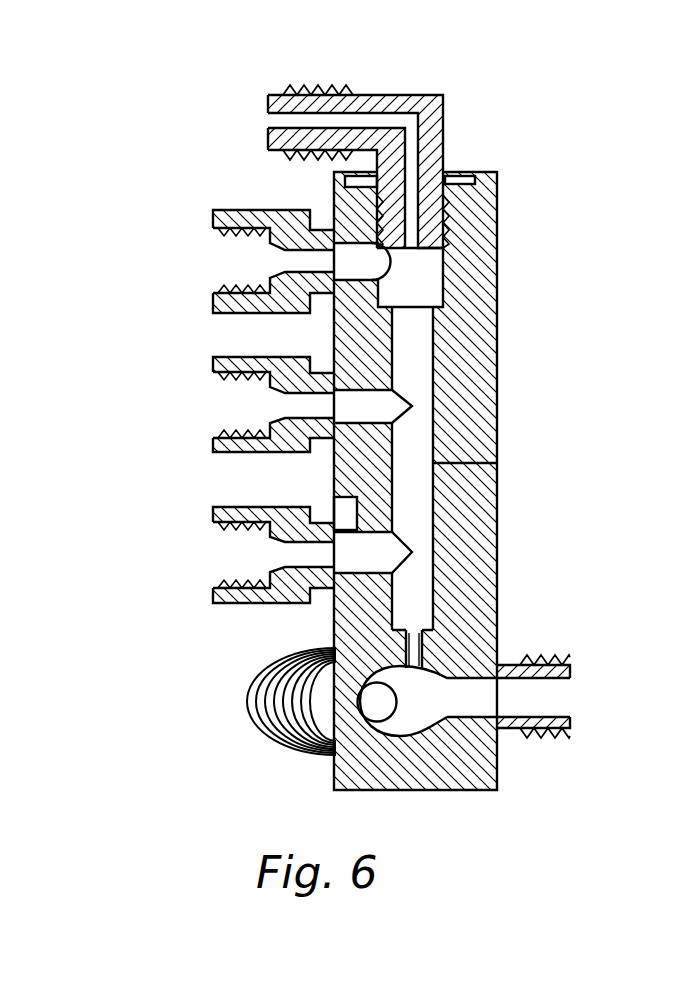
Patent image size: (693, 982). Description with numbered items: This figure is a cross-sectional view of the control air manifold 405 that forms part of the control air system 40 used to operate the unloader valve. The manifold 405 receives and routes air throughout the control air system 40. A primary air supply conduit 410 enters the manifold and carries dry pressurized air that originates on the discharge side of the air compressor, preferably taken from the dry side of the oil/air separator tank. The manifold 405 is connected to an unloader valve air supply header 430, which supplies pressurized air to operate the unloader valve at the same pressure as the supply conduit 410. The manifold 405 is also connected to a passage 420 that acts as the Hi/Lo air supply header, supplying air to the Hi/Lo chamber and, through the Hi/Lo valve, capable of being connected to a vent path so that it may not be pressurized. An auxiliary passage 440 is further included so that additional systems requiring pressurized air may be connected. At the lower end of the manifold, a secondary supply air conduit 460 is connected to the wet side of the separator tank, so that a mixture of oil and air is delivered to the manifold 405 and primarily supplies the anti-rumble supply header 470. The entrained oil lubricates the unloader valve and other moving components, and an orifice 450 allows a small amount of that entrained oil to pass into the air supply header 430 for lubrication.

The control air system 40 is at (512, 61).
The control air manifold 405 is at (475, 317).
The primary air supply conduit 410 is at (264, 120).
The Hi/Lo air supply header 420 is at (220, 413).
The unloader valve air supply header 430 is at (222, 262).
The auxiliary passage 440 is at (216, 558).
The orifice 450 is at (403, 649).
The secondary supply air conduit 460 is at (240, 714).
The anti-rumble supply header 470 is at (558, 686).